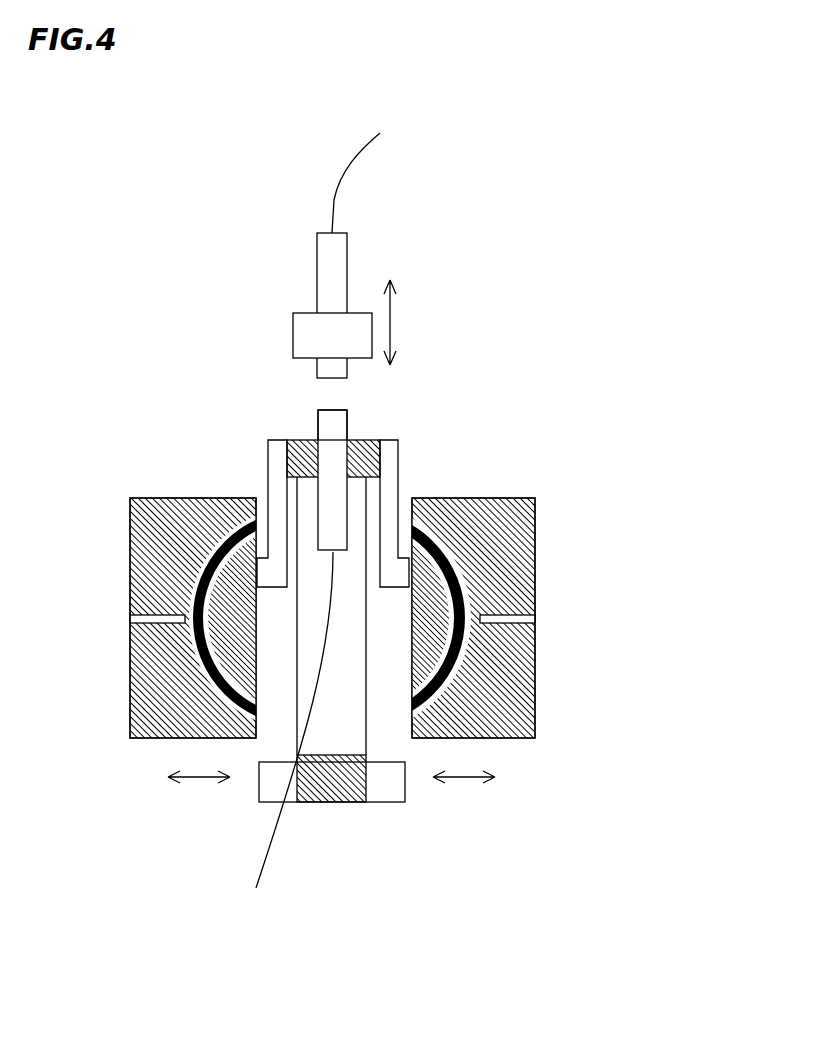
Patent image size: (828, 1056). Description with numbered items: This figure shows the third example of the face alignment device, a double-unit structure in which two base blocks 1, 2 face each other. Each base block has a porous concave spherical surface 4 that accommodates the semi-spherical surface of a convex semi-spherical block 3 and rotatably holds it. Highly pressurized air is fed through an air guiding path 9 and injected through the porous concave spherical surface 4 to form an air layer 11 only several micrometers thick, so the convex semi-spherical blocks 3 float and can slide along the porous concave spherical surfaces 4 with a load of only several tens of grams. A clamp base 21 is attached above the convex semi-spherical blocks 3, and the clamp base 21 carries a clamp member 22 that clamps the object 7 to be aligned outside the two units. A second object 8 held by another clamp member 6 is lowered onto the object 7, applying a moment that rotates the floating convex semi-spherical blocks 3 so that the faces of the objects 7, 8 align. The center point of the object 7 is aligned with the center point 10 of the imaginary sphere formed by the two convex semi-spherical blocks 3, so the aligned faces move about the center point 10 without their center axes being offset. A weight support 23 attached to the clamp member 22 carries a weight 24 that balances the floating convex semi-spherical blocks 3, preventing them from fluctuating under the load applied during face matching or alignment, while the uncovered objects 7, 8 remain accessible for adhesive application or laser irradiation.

The base block 1 is at (147, 738).
The base block 2 is at (490, 738).
The convex semi-spherical block 3 is at (235, 632).
The porous concave spherical surface 4 is at (200, 570).
The clamp member 6 is at (307, 312).
The object 7 is at (347, 428).
The object 8 is at (348, 270).
The air guiding path 9 is at (130, 618).
The center point 10 is at (366, 598).
The air layer 11 is at (236, 532).
The clamp base 21 is at (398, 482).
The clamp member 22 is at (287, 440).
The weight support 23 is at (295, 508).
The weight 24 is at (405, 783).